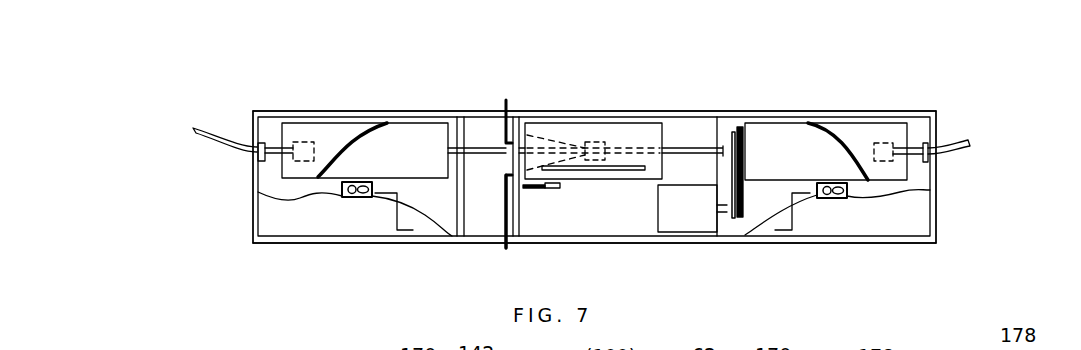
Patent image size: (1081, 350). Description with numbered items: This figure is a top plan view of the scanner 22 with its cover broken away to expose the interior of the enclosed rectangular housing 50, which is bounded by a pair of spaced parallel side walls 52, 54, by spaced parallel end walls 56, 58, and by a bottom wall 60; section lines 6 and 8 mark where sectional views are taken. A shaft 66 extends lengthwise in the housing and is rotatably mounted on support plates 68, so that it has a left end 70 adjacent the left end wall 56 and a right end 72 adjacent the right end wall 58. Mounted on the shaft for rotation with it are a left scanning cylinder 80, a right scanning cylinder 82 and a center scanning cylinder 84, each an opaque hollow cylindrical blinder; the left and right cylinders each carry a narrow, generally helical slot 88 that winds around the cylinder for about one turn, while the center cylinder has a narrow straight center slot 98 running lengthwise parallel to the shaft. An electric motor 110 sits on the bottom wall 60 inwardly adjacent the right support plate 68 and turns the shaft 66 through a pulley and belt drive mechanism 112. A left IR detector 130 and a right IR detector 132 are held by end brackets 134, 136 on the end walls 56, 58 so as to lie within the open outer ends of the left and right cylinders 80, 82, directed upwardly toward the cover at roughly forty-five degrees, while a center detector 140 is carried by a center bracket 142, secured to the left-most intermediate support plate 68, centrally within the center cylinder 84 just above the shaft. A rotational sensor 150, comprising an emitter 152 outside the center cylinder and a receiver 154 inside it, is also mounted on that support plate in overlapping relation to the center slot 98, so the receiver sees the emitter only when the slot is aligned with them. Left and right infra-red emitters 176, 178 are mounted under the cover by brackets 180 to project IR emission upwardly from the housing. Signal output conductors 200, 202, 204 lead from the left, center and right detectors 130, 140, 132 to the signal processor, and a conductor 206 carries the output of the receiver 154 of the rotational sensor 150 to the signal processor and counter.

The section line 6 is at (229, 170).
The section line 8 is at (813, 98).
The scanner 22 is at (963, 215).
The housing 50 is at (938, 110).
The side wall 52 is at (265, 110).
The side wall 54 is at (523, 244).
The left end wall 56 is at (253, 203).
The right end wall 58 is at (937, 232).
The bottom wall 60 is at (482, 210).
The shaft 66 is at (457, 165).
The support plate 68 is at (520, 125).
The left end of shaft 70 is at (456, 178).
The right end of shaft 72 is at (735, 128).
The left scanning cylinder 80 is at (303, 172).
The right scanning cylinder 82 is at (768, 153).
The center scanning cylinder 84 is at (582, 135).
The helical slot 88 is at (372, 127).
The center slot 98 is at (633, 150).
The electric motor 110 is at (680, 223).
The pulley and belt drive mechanism 112 is at (742, 152).
The left IR detector 130 is at (313, 142).
The right IR detector 132 is at (884, 140).
The end bracket 134 is at (259, 145).
The end bracket 136 is at (930, 145).
The center detector 140 is at (608, 140).
The center bracket 142 is at (548, 130).
The rotational sensor 150 is at (536, 192).
The emitter 152 is at (548, 190).
The receiver 154 is at (562, 173).
The left infra-red emitter 176 is at (345, 198).
The right infra-red emitter 178 is at (836, 200).
The bracket 180 is at (358, 198).
The signal output conductor 200 is at (210, 145).
The signal output conductor 202 is at (473, 140).
The signal output conductor 204 is at (958, 151).
The signal output conductor 206 is at (506, 248).